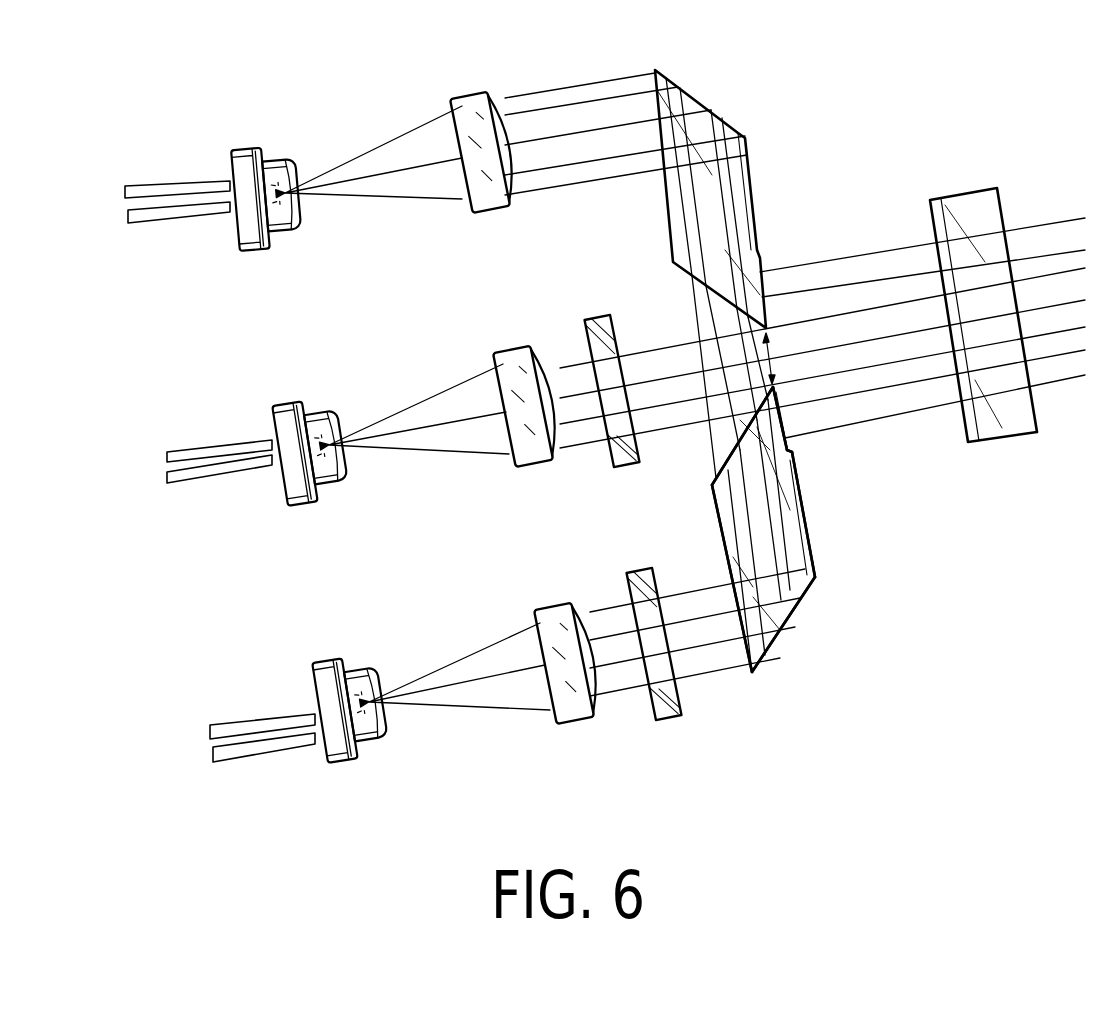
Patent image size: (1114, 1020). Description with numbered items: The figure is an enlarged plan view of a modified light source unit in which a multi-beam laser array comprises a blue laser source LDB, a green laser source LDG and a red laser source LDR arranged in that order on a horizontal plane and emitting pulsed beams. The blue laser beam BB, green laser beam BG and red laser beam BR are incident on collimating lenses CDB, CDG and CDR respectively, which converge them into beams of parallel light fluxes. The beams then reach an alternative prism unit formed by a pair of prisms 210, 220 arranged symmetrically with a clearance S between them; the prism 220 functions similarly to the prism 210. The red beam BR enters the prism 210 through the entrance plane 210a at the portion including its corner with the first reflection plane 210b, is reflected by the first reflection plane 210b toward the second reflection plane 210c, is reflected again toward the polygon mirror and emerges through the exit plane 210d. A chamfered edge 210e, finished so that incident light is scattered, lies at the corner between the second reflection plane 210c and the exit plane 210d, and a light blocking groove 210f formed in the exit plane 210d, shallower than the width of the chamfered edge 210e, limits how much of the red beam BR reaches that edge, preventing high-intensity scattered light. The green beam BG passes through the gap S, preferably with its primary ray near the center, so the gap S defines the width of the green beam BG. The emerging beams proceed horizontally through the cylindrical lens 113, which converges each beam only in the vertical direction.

The blue laser source LDB is at (235, 152).
The blue laser beam BB is at (383, 148).
The collimating lens for the blue beam CDB is at (460, 97).
The prism 220 is at (716, 93).
The cylindrical lens 113 is at (960, 195).
The clearance (gap) S is at (766, 352).
The green laser source LDG is at (282, 405).
The green laser beam BG is at (413, 403).
The collimating lens for the green beam CDG is at (510, 347).
The red laser source LDR is at (318, 662).
The red laser beam BR is at (463, 657).
The collimating lens for the red beam CDR is at (550, 606).
The prism 210 is at (845, 571).
The entrance plane 210a is at (720, 543).
The first reflection plane 210b is at (786, 622).
The second reflection plane 210c is at (735, 450).
The exit plane 210d is at (808, 533).
The chamfered edge 210e is at (773, 386).
The light blocking groove 210f is at (790, 455).